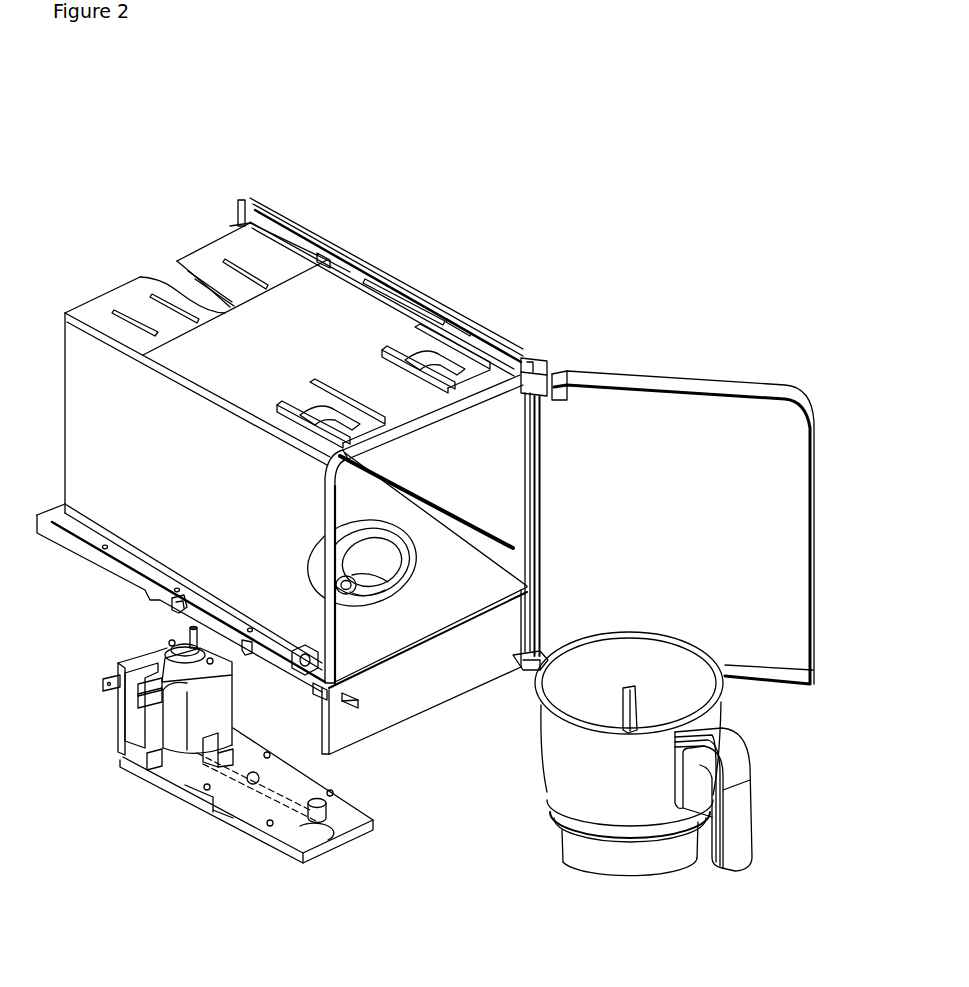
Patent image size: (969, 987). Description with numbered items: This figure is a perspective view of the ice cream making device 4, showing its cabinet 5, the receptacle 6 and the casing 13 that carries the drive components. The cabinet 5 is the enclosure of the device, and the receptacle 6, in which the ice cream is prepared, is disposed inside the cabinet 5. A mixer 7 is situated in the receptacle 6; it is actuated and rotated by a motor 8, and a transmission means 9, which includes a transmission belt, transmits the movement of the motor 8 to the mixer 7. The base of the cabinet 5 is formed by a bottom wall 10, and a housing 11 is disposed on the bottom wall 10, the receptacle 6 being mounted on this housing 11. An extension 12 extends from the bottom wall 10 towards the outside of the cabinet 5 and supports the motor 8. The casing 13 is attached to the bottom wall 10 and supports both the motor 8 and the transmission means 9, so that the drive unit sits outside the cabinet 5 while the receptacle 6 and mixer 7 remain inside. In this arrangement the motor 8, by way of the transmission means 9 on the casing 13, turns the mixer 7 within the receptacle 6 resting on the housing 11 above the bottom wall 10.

The ice cream making device 4 is at (336, 168).
The cabinet 5 is at (72, 410).
The receptacle 6 is at (587, 793).
The mixer 7 is at (627, 695).
The motor 8 is at (132, 707).
The transmission means 9 is at (256, 802).
The bottom wall 10 is at (173, 605).
The housing 11 is at (388, 573).
The extension 12 is at (70, 542).
The casing 13 is at (187, 793).